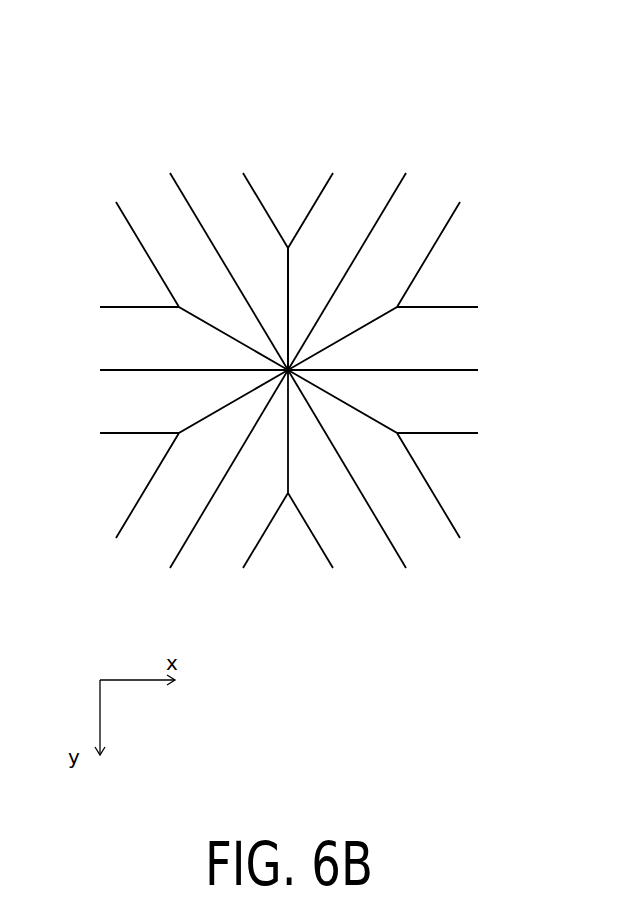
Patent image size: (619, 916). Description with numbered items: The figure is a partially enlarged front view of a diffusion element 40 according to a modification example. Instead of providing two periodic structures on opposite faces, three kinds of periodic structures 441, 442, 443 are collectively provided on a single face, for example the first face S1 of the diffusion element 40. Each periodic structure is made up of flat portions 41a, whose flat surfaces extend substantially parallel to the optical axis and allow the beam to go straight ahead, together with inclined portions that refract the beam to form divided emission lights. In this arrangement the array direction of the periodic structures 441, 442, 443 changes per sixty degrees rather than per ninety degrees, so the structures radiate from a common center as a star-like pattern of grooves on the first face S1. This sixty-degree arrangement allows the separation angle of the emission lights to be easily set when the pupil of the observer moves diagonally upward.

The diffusion element 40 is at (466, 108).
The first face S1 is at (302, 136).
The flat portions 41a is at (286, 188).
The periodic structure 441 is at (355, 135).
The periodic structure 442 is at (100, 307).
The periodic structure 443 is at (222, 133).